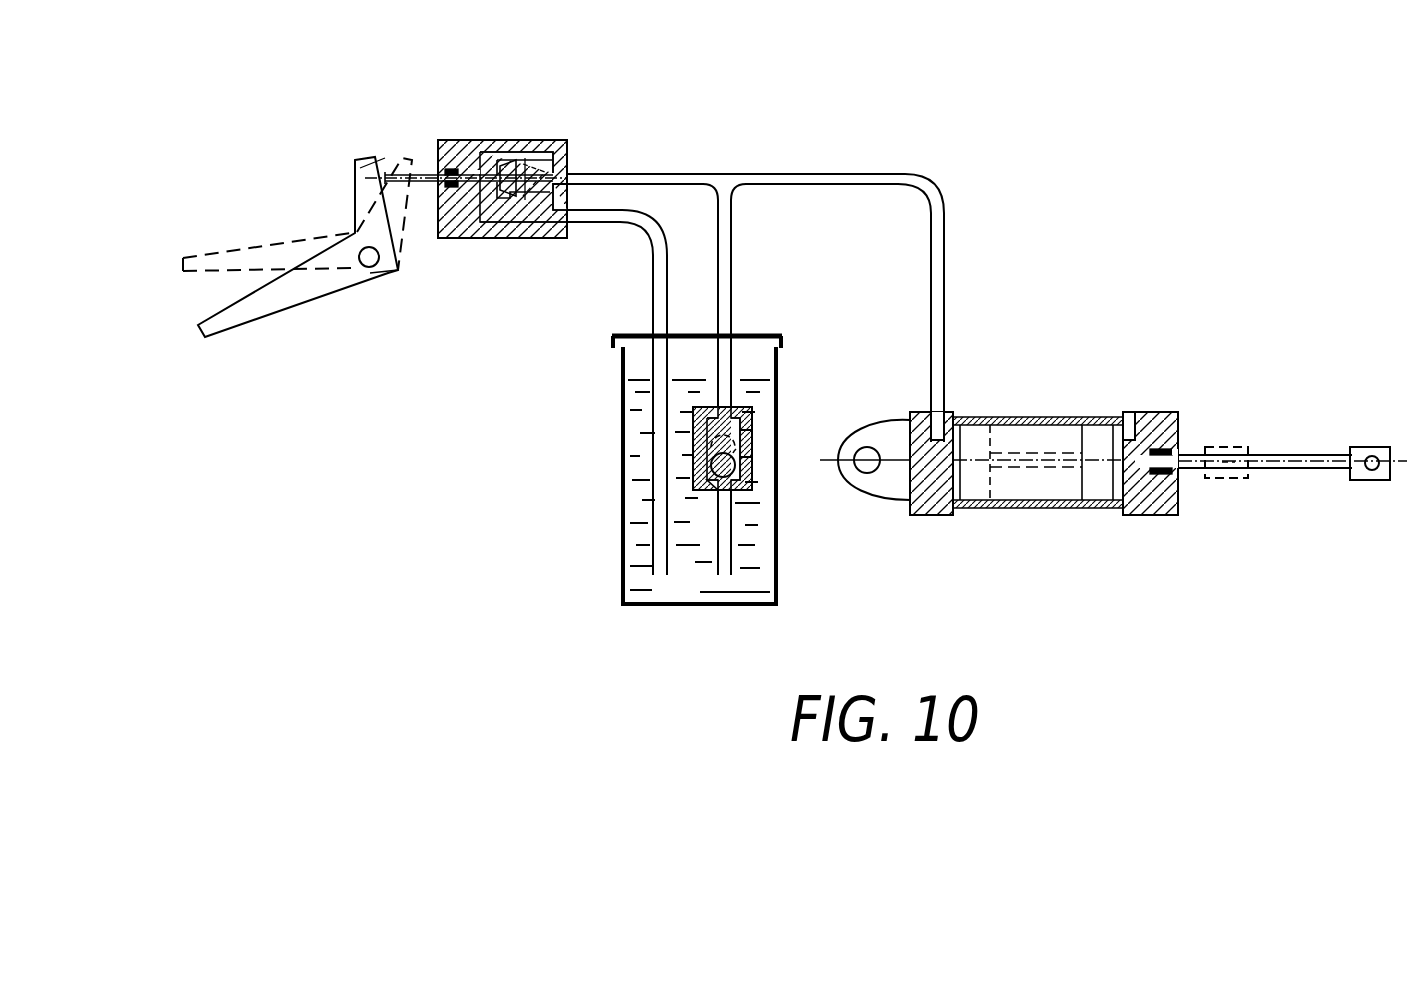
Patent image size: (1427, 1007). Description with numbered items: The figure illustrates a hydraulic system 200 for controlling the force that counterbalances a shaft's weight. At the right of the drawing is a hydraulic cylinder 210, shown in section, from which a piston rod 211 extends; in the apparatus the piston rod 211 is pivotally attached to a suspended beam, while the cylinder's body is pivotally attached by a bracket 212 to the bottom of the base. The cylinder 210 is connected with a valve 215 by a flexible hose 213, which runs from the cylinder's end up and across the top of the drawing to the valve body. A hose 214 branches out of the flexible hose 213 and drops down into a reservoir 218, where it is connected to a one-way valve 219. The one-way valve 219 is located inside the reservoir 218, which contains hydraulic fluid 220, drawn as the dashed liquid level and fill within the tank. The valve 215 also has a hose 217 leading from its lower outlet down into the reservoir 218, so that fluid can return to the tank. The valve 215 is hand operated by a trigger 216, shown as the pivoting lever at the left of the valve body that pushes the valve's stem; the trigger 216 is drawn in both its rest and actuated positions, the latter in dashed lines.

The hydraulic system 200 is at (800, 136).
The hydraulic cylinder 210 is at (1035, 508).
The piston rod 211 is at (1222, 478).
The bracket 212 is at (877, 490).
The flexible hose 213 is at (946, 238).
The hose 214 is at (726, 238).
The valve 215 is at (452, 140).
The trigger 216 is at (320, 292).
The hose 217 is at (650, 248).
The reservoir 218 is at (620, 442).
The one-way valve 219 is at (752, 490).
The hydraulic fluid 220 is at (640, 588).